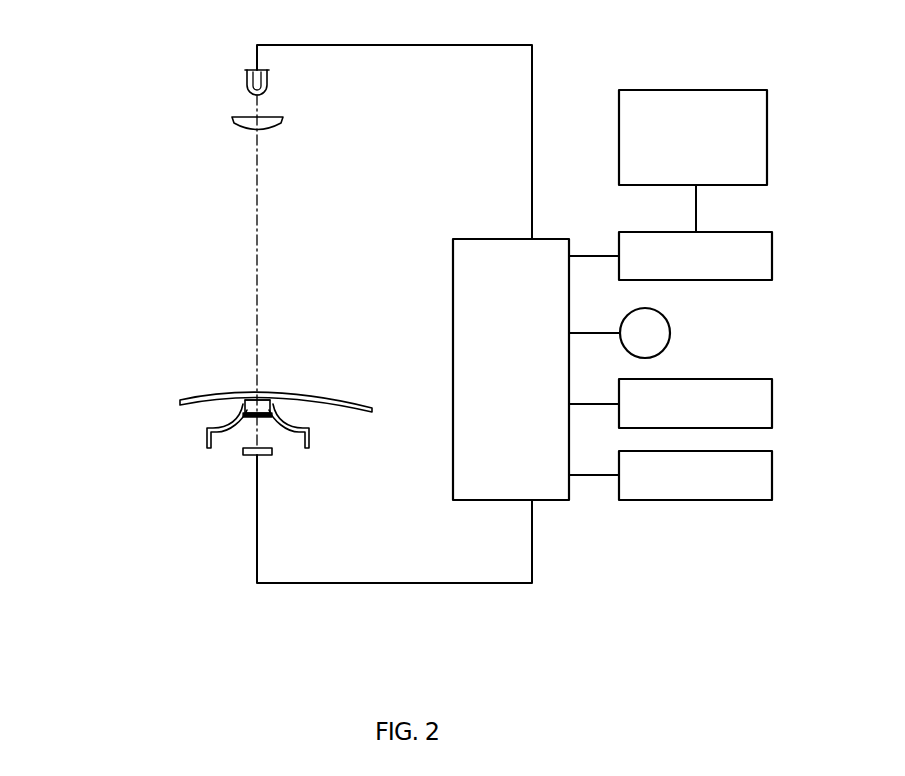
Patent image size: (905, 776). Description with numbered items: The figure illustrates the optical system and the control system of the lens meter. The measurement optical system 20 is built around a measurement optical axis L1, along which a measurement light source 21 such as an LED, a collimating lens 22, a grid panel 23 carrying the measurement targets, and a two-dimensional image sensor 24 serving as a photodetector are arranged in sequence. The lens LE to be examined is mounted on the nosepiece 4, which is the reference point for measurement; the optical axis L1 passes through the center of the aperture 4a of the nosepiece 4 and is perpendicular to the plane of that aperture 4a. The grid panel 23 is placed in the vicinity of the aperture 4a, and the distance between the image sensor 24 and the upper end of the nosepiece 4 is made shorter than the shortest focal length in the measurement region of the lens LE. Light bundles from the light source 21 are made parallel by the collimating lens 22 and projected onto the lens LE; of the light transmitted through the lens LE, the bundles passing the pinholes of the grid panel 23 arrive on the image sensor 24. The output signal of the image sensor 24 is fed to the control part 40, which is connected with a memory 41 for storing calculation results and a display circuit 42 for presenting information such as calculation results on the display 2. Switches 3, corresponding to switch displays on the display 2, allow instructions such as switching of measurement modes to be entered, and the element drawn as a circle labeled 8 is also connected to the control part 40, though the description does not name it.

The measurement optical system 20 is at (120, 193).
The measurement light source 21 is at (247, 81).
The collimating lens 22 is at (232, 119).
The measurement optical axis L1 is at (257, 256).
The lens to be examined LE is at (232, 393).
The nosepiece 4 is at (245, 404).
The aperture 4a is at (258, 396).
The grid panel 23 is at (250, 418).
The two-dimensional image sensor 24 is at (262, 455).
The control part 40 is at (452, 345).
The display 2 is at (716, 88).
The display circuit 42 is at (772, 256).
The switch 8 is at (670, 332).
The memory 41 is at (772, 404).
The switches 3 is at (772, 475).